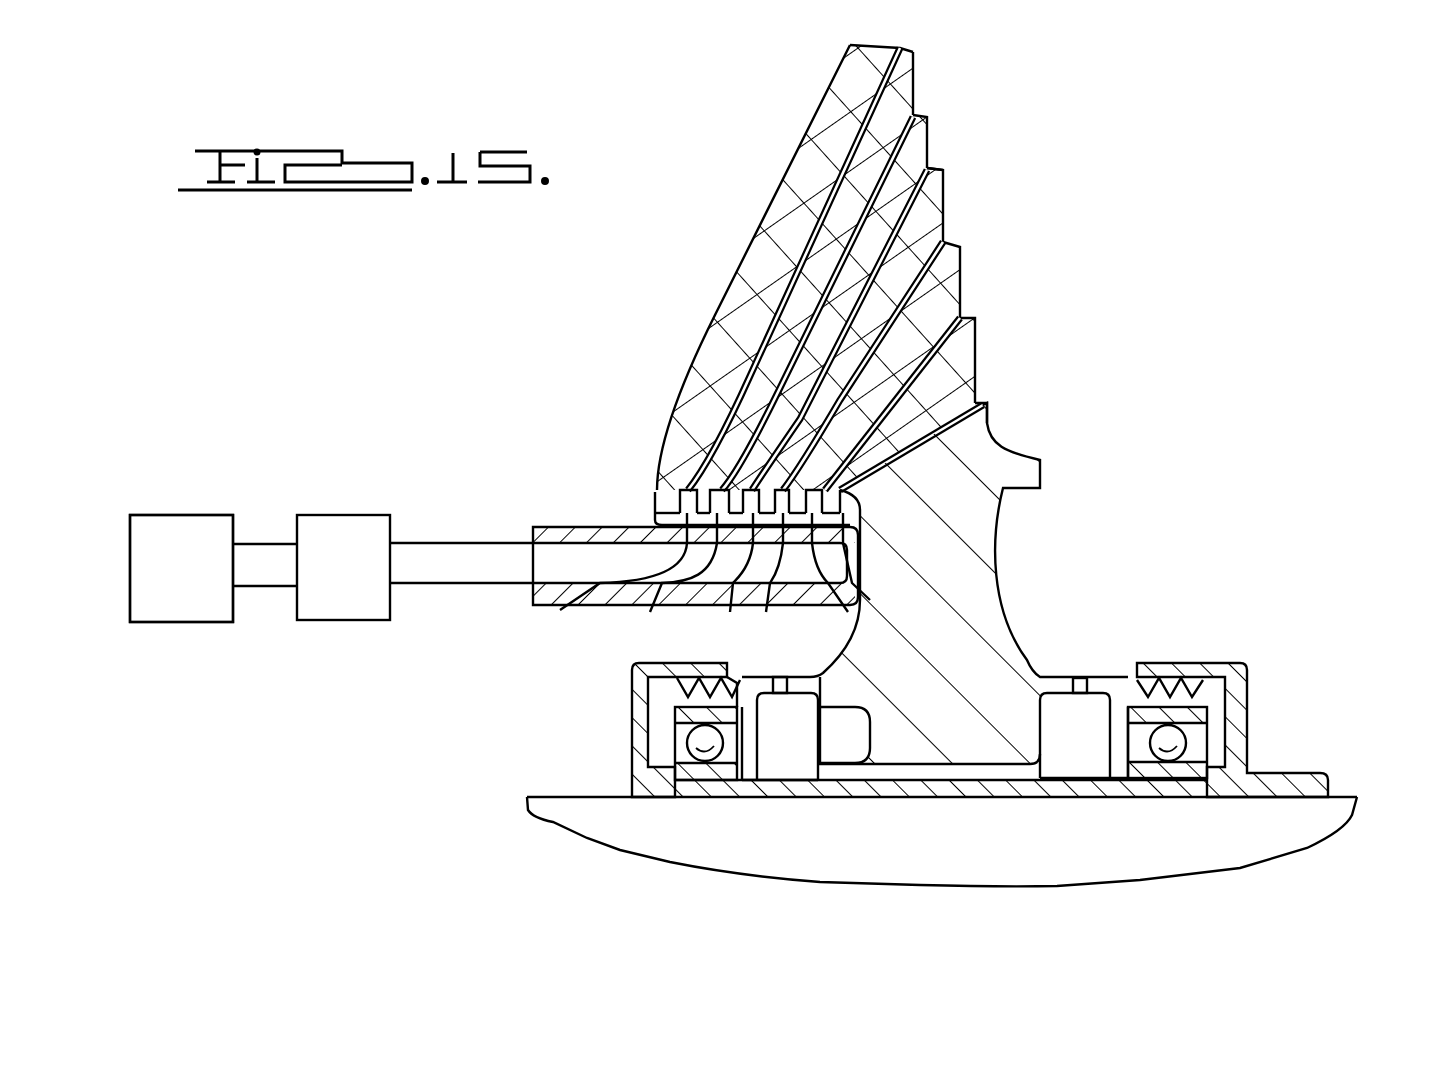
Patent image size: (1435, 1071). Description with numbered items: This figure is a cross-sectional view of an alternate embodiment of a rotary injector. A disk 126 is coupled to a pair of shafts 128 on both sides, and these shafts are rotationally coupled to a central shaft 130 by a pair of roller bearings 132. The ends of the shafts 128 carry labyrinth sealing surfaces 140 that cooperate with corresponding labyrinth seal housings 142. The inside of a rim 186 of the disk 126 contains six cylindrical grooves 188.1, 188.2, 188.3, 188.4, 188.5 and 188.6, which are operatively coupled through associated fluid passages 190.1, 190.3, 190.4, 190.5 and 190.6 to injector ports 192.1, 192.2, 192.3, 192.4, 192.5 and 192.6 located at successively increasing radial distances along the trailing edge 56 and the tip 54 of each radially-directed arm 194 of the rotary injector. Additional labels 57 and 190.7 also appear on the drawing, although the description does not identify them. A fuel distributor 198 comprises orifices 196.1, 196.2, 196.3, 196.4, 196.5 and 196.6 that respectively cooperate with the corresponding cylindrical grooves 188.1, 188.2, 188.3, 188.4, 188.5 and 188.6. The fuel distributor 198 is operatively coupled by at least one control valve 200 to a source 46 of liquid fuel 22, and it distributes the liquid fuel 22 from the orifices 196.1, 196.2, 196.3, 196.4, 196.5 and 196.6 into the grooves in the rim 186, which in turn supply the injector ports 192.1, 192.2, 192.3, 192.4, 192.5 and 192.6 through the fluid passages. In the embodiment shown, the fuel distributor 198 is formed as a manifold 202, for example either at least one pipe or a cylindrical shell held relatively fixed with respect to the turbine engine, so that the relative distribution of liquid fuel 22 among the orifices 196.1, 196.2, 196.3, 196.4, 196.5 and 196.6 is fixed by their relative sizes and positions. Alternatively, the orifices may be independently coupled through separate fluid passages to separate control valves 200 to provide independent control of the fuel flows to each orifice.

The liquid fuel 22 is at (168, 578).
The source of liquid fuel 46 is at (177, 515).
The tip 54 is at (851, 45).
The trailing edge 56 is at (1045, 238).
The layer step 57 is at (958, 170).
The disk 126 is at (1005, 595).
The shafts 128 is at (1088, 690).
The central shaft 130 is at (1338, 805).
The roller bearings 132 is at (697, 745).
The labyrinth sealing surfaces 140 is at (662, 688).
The labyrinth seal housings 142 is at (640, 668).
The rim 186 is at (1043, 463).
The cylindrical groove 188.1 is at (858, 522).
The cylindrical groove 188.2 is at (847, 497).
The cylindrical groove 188.3 is at (884, 462).
The cylindrical groove 188.4 is at (735, 518).
The cylindrical groove 188.5 is at (733, 488).
The cylindrical groove 188.6 is at (660, 492).
The fluid passage 190.1 is at (987, 420).
The fluid passage 190.3 is at (848, 392).
The fluid passage 190.4 is at (853, 303).
The fluid passage 190.5 is at (887, 187).
The fluid passage 190.6 is at (860, 108).
The layer 190.7 is at (980, 345).
The injector port 192.1 is at (977, 400).
The injector port 192.2 is at (962, 318).
The injector port 192.3 is at (945, 242).
The injector port 192.4 is at (927, 167).
The injector port 192.5 is at (913, 113).
The injector port 192.6 is at (908, 47).
The radially-directed arm 194 is at (838, 72).
The orifice 196.1 is at (896, 567).
The orifice 196.2 is at (870, 582).
The orifice 196.3 is at (767, 585).
The orifice 196.4 is at (709, 573).
The orifice 196.5 is at (656, 580).
The orifice 196.6 is at (598, 575).
The fuel distributor 198 is at (540, 527).
The control valve 200 is at (325, 580).
The manifold 202 is at (618, 563).